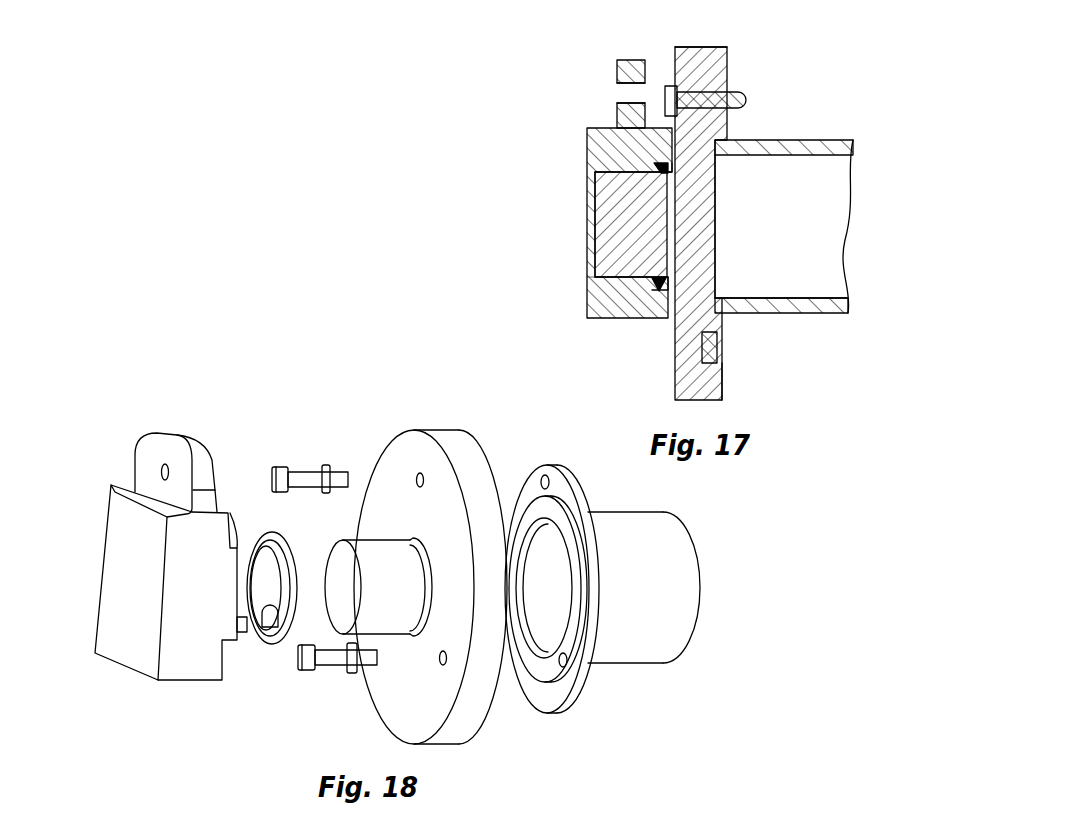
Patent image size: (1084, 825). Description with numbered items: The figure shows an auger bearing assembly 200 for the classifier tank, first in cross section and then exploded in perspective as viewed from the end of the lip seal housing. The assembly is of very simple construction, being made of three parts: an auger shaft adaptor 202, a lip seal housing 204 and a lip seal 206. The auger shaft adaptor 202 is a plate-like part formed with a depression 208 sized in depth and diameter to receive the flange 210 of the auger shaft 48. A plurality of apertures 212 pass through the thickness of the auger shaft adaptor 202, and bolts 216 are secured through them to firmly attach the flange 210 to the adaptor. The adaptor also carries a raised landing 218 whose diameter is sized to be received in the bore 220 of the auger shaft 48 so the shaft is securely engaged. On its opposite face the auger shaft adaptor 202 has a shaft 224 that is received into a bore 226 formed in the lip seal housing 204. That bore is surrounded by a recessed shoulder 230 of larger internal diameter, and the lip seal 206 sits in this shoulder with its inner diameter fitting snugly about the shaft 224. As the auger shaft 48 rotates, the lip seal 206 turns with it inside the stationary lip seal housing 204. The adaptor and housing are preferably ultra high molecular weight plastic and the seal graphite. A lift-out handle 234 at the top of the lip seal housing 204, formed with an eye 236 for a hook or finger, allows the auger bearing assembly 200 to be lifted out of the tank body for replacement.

In FIG. 17, the auger shaft 48 is at (827, 313).
In FIG. 18, the auger shaft 48 is at (683, 578).
In FIG. 17, the auger bearing assembly 200 is at (814, 91).
In FIG. 17, the auger shaft adaptor 202 is at (705, 388).
In FIG. 18, the auger shaft adaptor 202 is at (476, 455).
In FIG. 17, the lip seal housing 204 is at (592, 282).
In FIG. 18, the lip seal housing 204 is at (140, 657).
In FIG. 17, the lip seal 206 is at (648, 287).
In FIG. 18, the lip seal 206 is at (283, 535).
In FIG. 17, the depression 208 is at (722, 336).
In FIG. 17, the flange 210 is at (718, 348).
In FIG. 18, the flange 210 is at (566, 481).
In FIG. 17, the apertures 212 is at (715, 50).
In FIG. 18, the apertures 212 is at (420, 474).
In FIG. 17, the bolts 216 is at (735, 93).
In FIG. 18, the bolts 216 is at (307, 478).
In FIG. 17, the raised landing 218 is at (718, 237).
In FIG. 17, the bore 220 is at (740, 300).
In FIG. 17, the shaft 224 is at (602, 212).
In FIG. 18, the shaft 224 is at (335, 565).
In FIG. 17, the bore 226 is at (603, 162).
In FIG. 17, the recessed shoulder 230 is at (663, 292).
In FIG. 17, the lift-out handle 234 is at (630, 68).
In FIG. 18, the lift-out handle 234 is at (183, 437).
In FIG. 17, the eye 236 is at (623, 92).
In FIG. 18, the eye 236 is at (163, 468).